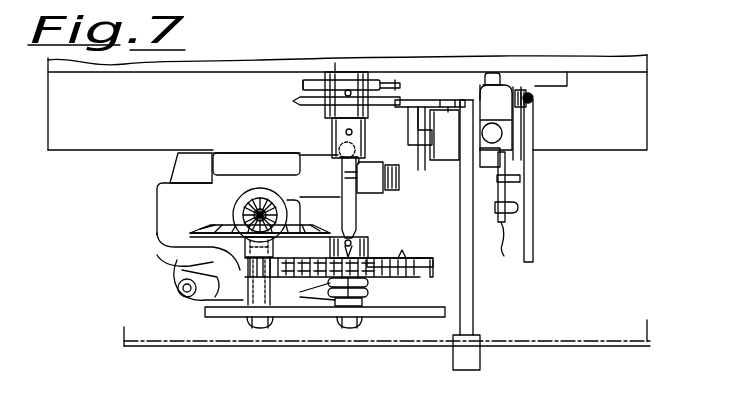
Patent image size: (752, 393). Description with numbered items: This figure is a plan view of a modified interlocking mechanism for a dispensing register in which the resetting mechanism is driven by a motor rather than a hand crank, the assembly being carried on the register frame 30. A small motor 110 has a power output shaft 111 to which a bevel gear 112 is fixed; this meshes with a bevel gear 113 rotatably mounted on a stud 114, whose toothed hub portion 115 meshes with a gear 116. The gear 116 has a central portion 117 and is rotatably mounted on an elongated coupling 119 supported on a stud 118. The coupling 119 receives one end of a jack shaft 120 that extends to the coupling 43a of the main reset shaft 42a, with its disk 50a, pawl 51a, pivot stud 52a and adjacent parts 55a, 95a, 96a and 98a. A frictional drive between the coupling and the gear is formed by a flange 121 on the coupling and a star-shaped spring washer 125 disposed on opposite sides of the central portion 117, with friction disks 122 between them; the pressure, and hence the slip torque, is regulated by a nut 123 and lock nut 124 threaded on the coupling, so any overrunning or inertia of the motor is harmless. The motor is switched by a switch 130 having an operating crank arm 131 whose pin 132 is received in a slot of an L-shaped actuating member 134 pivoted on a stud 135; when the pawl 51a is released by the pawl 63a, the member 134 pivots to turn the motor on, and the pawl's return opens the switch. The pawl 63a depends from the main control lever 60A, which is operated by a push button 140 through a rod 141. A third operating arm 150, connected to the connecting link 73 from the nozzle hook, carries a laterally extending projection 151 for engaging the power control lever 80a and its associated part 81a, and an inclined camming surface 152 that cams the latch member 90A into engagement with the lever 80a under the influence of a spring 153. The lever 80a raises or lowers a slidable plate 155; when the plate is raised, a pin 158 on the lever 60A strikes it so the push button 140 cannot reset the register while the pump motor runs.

The frame 30 is at (645, 60).
The motor 110 is at (155, 207).
The power output shaft 111 is at (254, 215).
The bevel gear 112 is at (243, 204).
The bevel gear 113 is at (160, 237).
The stud 114 is at (258, 330).
The toothed hub portion 115 is at (178, 266).
The gear 116 is at (432, 277).
The central portion 117 is at (420, 260).
The stud 118 is at (348, 330).
The elongated coupling 119 is at (330, 246).
The jack shaft 120 is at (333, 155).
The flange 121 is at (380, 258).
The disks 122 is at (407, 246).
The nut 123 is at (363, 300).
The lock nut 124 is at (364, 305).
The star-shaped spring washer 125 is at (369, 282).
The switch 130 is at (342, 185).
The operating crank arm 131 is at (382, 194).
The pin 132 is at (400, 192).
The L-shaped actuating member 134 is at (417, 143).
The stud 135 is at (409, 125).
The push button 140 is at (481, 360).
The rod 141 is at (474, 291).
The third operating arm 150 is at (514, 135).
The laterally extending projection 151 is at (521, 179).
The inclined camming surface 152 is at (522, 92).
The spring 153 is at (532, 96).
The plate 155 is at (501, 158).
The pin 158 is at (461, 180).
The main reset shaft 42a is at (336, 76).
The coupling 43a is at (326, 112).
The disk 50a is at (294, 100).
The pawl 51a is at (420, 100).
The pivot stud 52a is at (441, 100).
The plate 55a is at (450, 108).
The main control lever 60A is at (445, 135).
The pawl 63a is at (482, 95).
The connecting link 73 is at (534, 240).
The power control lever 80a is at (504, 210).
The latch 81a is at (519, 207).
The latch member 90A is at (506, 100).
The flange 95a is at (304, 80).
The pin 96a is at (398, 84).
The cap 98a is at (497, 74).